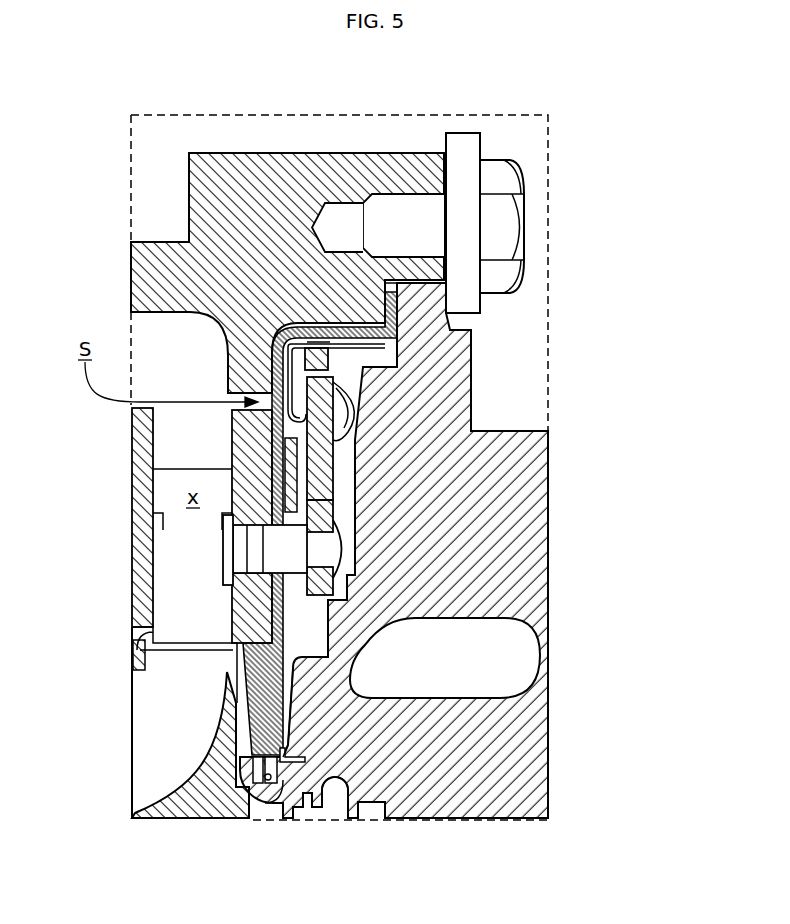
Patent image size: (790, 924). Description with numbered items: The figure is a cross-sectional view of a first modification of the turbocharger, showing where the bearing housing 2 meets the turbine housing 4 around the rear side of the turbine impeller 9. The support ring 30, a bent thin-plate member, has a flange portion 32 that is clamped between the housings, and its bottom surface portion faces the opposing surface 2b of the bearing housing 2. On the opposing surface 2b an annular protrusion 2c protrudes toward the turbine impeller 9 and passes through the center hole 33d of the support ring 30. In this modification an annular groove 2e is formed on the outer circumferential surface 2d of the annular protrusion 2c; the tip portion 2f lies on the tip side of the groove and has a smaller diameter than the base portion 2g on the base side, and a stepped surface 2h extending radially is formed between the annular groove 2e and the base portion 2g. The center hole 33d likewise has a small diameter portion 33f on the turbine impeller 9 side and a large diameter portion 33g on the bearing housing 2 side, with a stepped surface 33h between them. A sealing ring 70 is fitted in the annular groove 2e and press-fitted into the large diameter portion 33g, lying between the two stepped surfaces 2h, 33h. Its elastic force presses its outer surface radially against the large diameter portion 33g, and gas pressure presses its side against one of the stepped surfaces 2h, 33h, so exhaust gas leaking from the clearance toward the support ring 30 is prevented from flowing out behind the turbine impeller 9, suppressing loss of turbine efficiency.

The bearing housing 2 is at (472, 330).
The opposing surface 2b is at (318, 745).
The annular protrusion 2c is at (318, 768).
The outer circumferential surface 2d is at (325, 758).
The annular groove 2e is at (308, 800).
The tip portion 2f is at (286, 805).
The base portion 2g is at (348, 792).
The stepped surface 2h is at (330, 782).
The turbine housing 4 is at (367, 153).
The turbine impeller 9 is at (143, 803).
The support ring 30 is at (397, 313).
The flange portion 32 is at (398, 303).
The center hole 33d is at (268, 778).
The small diameter portion 33f is at (272, 788).
The large diameter portion 33g is at (252, 748).
The stepped surface 33h is at (258, 762).
The sealing ring 70 is at (258, 792).